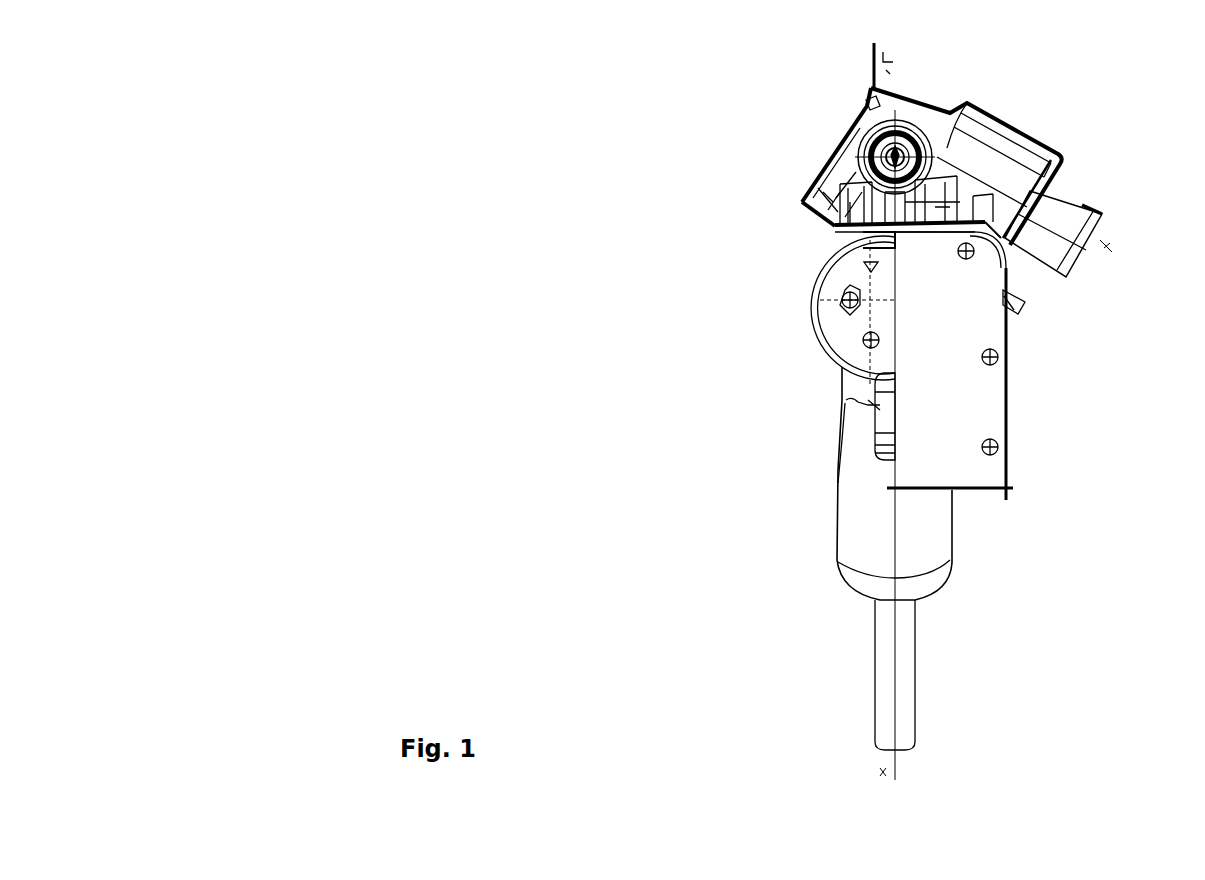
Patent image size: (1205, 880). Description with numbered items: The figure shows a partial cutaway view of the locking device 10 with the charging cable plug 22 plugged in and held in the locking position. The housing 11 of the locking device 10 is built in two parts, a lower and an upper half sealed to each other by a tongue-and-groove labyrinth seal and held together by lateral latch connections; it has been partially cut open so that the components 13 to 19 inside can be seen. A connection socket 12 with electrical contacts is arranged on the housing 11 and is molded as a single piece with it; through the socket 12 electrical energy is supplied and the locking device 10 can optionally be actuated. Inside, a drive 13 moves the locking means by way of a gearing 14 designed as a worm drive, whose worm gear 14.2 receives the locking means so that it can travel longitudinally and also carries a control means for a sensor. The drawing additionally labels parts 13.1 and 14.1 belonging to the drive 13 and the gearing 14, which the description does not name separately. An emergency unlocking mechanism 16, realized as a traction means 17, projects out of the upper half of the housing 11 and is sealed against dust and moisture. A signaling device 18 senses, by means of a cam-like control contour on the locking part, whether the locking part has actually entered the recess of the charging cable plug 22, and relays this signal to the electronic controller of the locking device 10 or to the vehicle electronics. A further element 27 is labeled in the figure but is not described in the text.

The locking device 10 is at (1113, 131).
The housing 11 is at (800, 197).
The connection socket 12 is at (1103, 208).
The drive 13 is at (987, 101).
The housing flange 13.1 is at (868, 96).
The gearing 14 is at (851, 128).
The worm gear 14.2 is at (895, 157).
The gear output / hub 14.1 is at (917, 92).
The emergency unlocking mechanism 16 is at (872, 53).
The traction means 17 is at (888, 63).
The first signaling device 18 is at (832, 258).
The fastening screw 19 is at (943, 228).
The charging cable plug 22 is at (822, 333).
The shaft / extension tube 27 is at (908, 673).